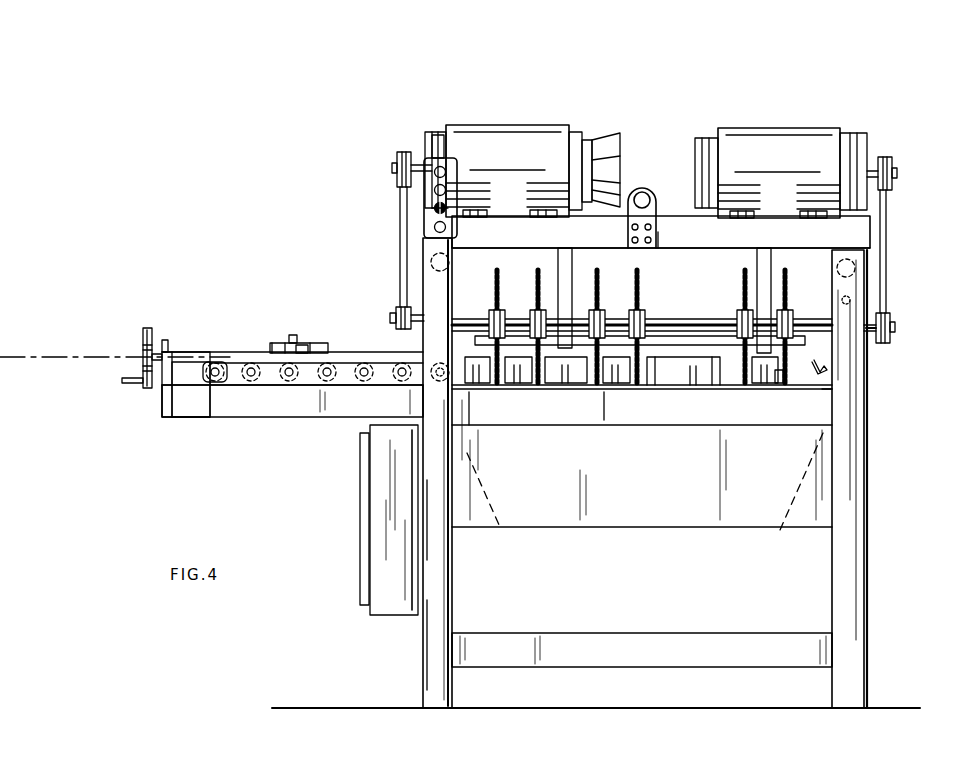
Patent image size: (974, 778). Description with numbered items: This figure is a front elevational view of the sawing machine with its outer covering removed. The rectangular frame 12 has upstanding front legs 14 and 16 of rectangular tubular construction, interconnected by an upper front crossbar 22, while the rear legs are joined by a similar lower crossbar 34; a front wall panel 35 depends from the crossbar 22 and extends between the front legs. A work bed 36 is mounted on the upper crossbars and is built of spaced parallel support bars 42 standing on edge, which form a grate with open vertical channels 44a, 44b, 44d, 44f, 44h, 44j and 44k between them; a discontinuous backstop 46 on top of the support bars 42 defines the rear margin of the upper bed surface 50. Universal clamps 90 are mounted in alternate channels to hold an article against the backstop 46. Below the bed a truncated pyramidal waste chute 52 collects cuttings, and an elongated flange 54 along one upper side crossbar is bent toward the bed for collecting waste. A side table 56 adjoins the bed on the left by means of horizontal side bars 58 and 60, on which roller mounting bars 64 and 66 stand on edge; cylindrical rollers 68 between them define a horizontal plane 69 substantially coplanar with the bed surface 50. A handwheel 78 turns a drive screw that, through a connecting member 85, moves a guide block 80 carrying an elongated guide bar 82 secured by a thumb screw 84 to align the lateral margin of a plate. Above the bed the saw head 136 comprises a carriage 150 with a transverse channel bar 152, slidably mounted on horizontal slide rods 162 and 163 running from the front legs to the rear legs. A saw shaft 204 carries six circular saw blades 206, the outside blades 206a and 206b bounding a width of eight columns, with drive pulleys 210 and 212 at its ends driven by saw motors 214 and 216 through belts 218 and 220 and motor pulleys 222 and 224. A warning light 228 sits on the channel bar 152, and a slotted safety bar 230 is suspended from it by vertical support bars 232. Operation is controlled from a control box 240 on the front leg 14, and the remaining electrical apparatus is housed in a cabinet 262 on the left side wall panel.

The frame 12 is at (599, 592).
The front leg 14 is at (419, 473).
The front leg 16 is at (878, 479).
The upper front crossbar 22 is at (642, 420).
The lower crossbar 34 is at (642, 690).
The front wall panel 35 is at (628, 498).
The work bed 36 is at (844, 382).
The support bars 42 is at (573, 426).
The channel 44a is at (475, 386).
The channel 44b is at (491, 419).
The channel 44d is at (528, 386).
The channel 44f is at (568, 387).
The channel 44h is at (619, 387).
The channel 44j is at (746, 387).
The channel 44k is at (786, 393).
The backstop 46 is at (569, 425).
The upper surface of the bed 50 is at (642, 311).
The waste chute 52 is at (645, 505).
The flange 54 is at (863, 360).
The side table 56 is at (292, 324).
The side bar 58 is at (292, 425).
The side bar 60 is at (186, 410).
The roller mounting bar 64 is at (225, 384).
The roller mounting bar 66 is at (186, 378).
The rollers 68 is at (327, 336).
The horizontal plane 69 is at (115, 336).
The handwheel 78 is at (138, 339).
The guide block 80 is at (320, 343).
The guide bar 82 is at (319, 326).
The thumb screw 84 is at (291, 317).
The connecting member 85 is at (261, 324).
The universal clamps 90 is at (683, 405).
The saw head 136 is at (921, 106).
The carriage 150 is at (704, 232).
The channel bar 152 is at (661, 213).
The slide rod 162 is at (430, 262).
The slide rod 163 is at (856, 270).
The saw shaft 204 is at (915, 334).
The circular saw blades 206 is at (641, 316).
The saw blade 206a is at (505, 319).
The saw blade 206b is at (802, 319).
The drive pulley 210 is at (388, 306).
The drive pulley 212 is at (903, 320).
The saw motor 214 is at (522, 155).
The saw motor 216 is at (781, 154).
The belt 218 is at (404, 186).
The belt 220 is at (912, 251).
The motor pulley 222 is at (375, 157).
The motor pulley 224 is at (905, 171).
The warning light 228 is at (646, 197).
The safety bar 230 is at (640, 314).
The vertical support bars 232 is at (664, 285).
The control box 240 is at (387, 197).
The cabinet 262 is at (366, 533).